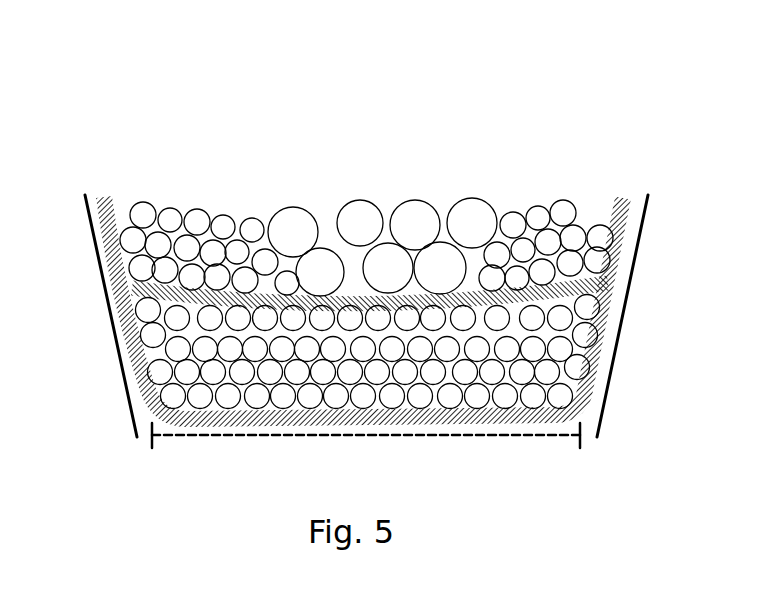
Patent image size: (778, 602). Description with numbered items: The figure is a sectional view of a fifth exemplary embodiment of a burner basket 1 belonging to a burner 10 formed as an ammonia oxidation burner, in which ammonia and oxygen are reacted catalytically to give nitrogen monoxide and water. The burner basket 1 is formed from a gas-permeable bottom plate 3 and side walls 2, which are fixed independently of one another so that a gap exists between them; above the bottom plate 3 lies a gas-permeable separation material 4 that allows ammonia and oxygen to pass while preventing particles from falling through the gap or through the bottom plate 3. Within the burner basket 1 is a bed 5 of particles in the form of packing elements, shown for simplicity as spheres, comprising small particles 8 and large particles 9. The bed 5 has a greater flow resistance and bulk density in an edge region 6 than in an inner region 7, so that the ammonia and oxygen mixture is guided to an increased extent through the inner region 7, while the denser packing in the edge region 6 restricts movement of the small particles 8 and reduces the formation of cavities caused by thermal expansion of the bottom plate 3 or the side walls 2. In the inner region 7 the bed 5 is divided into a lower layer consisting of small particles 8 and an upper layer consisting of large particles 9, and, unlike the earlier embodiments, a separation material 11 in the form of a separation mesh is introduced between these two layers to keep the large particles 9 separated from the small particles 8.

The burner basket 1 is at (652, 174).
The side walls 2 is at (637, 255).
The gas-permeable bottom plate 3 is at (190, 437).
The gas-permeable separation material 4 is at (617, 330).
The bed 5 is at (358, 151).
The edge region 6 is at (150, 189).
The inner region 7 is at (284, 189).
The small particles 8 is at (163, 333).
The large particles 9 is at (347, 237).
The burner 10 is at (437, 79).
The separation material 11 is at (605, 285).